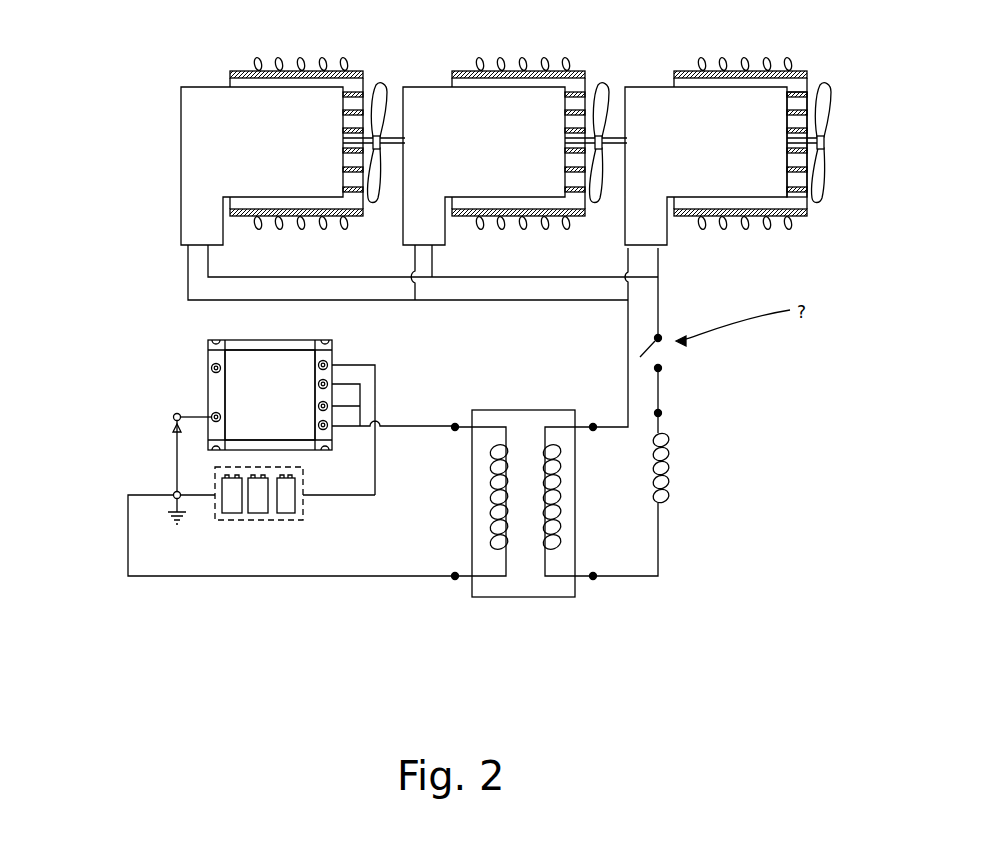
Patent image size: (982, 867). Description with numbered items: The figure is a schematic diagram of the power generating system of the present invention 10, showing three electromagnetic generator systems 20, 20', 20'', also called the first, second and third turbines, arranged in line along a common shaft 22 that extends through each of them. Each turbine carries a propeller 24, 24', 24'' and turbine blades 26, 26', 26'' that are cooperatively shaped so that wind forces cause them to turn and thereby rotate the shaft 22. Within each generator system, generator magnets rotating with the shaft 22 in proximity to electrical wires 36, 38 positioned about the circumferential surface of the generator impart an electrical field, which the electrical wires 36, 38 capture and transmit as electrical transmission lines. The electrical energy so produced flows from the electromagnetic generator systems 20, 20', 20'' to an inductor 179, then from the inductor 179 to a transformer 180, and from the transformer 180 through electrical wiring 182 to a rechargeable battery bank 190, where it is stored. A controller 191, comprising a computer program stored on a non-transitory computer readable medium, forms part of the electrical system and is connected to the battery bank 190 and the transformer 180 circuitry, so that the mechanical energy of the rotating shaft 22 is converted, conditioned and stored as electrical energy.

The present invention 10 is at (923, 72).
The electromagnetic generator system 20 is at (736, 140).
The electromagnetic generator system 20' is at (516, 138).
The electromagnetic generator system 20'' is at (251, 138).
The shaft 22 is at (810, 202).
The propeller 24 is at (847, 119).
The propeller 24' is at (636, 117).
The propeller 24'' is at (395, 117).
The turbine blades 26 is at (745, 133).
The turbine blades 26' is at (523, 130).
The turbine blades 26'' is at (301, 130).
The electrical wire 36 is at (626, 258).
The electrical wire 38 is at (660, 263).
The inductor 179 is at (693, 482).
The transformer 180 is at (572, 616).
The electrical wiring 182 is at (240, 578).
The rechargeable battery bank 190 is at (198, 477).
The controller 191 is at (172, 382).